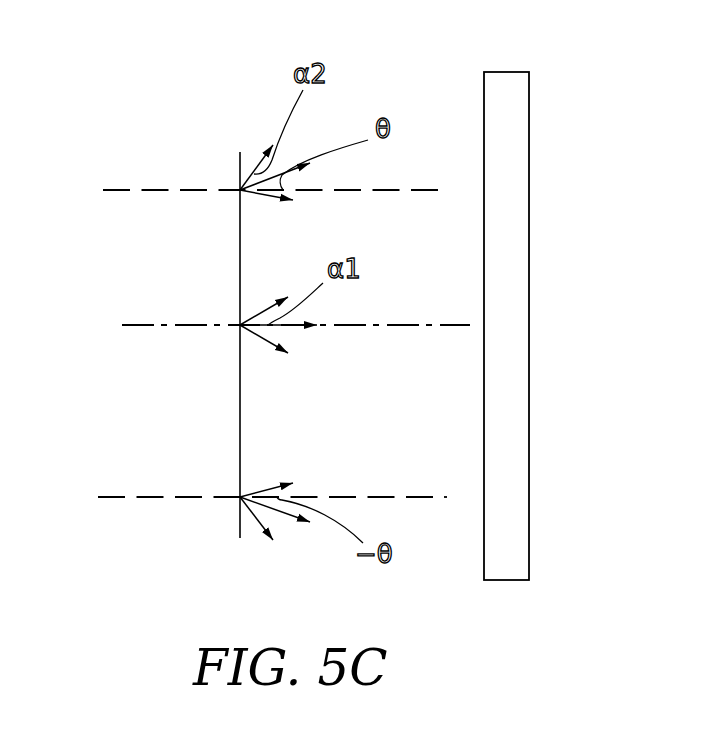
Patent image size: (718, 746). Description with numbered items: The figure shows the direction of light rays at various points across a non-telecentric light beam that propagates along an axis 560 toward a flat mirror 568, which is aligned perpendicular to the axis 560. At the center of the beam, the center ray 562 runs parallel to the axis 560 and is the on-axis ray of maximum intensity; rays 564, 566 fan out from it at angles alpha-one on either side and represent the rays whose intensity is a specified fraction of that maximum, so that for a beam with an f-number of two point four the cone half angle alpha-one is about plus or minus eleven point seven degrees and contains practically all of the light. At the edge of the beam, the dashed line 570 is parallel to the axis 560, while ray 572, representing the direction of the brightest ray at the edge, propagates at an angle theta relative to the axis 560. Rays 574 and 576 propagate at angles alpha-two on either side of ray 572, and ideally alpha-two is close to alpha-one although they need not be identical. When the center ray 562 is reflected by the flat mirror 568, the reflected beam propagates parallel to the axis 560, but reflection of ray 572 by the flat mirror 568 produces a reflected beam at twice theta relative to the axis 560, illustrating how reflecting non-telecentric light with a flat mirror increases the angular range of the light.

The axis 560 is at (150, 326).
The center ray 562 is at (300, 322).
The ray 564 is at (264, 310).
The ray 566 is at (268, 342).
The flat mirror 568 is at (530, 238).
The dashed line 570 is at (118, 190).
The ray 572 is at (295, 168).
The ray 574 is at (262, 154).
The ray 576 is at (268, 198).